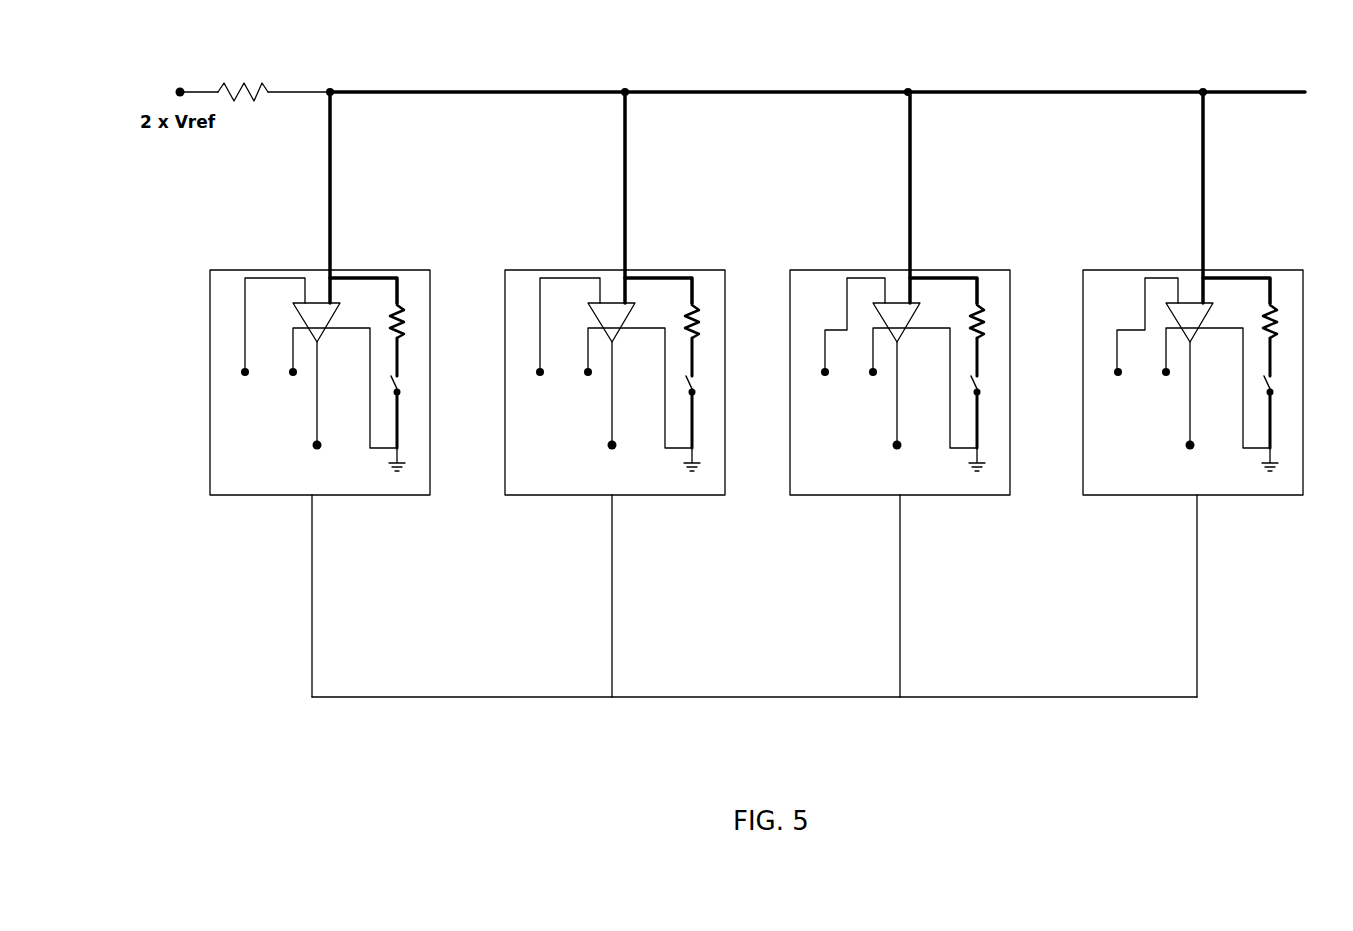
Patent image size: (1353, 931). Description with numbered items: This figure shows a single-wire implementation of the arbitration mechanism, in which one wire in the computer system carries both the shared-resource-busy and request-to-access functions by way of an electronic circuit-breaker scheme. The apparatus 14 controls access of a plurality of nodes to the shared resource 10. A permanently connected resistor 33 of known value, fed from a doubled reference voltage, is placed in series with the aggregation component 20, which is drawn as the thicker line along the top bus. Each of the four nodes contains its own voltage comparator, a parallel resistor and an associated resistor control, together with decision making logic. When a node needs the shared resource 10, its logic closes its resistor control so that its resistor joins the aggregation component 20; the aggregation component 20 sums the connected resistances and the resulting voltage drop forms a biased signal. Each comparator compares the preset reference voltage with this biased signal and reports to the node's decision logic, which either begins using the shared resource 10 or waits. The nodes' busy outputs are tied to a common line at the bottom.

The shared resource 10 is at (772, 698).
The apparatus for controlling access 14 is at (1018, 85).
The aggregation component 20 is at (777, 160).
The resistor 33 is at (228, 77).